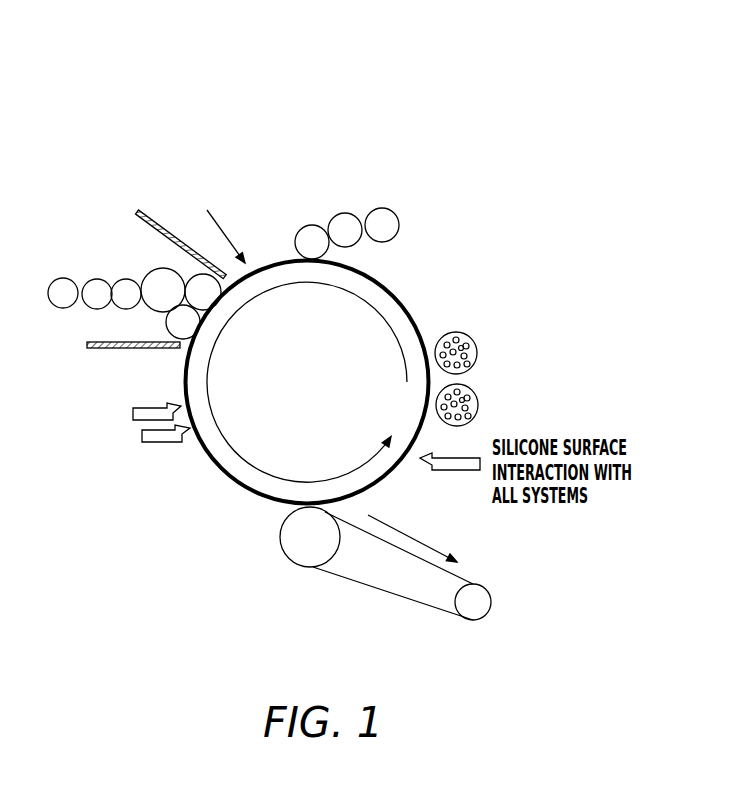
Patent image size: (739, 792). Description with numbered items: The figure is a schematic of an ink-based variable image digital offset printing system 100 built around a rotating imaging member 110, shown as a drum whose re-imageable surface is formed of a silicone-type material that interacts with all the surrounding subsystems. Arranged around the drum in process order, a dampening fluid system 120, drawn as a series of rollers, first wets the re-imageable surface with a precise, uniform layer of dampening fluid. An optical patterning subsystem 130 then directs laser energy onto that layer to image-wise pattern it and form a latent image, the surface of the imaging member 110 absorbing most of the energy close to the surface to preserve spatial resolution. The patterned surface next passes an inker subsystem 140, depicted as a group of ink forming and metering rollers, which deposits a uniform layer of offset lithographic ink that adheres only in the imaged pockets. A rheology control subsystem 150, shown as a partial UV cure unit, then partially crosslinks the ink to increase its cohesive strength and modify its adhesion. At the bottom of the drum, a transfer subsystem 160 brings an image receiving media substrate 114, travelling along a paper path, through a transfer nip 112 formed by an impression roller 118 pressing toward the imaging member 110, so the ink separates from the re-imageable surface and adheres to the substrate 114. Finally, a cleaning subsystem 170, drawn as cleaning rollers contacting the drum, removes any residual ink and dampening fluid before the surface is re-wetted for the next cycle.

The system 100 is at (190, 63).
The imaging member 110 is at (413, 285).
The transfer nip 112 is at (278, 510).
The image receiving media substrate 114 is at (452, 543).
The impression roller 118 is at (282, 552).
The dampening fluid system 120 is at (365, 168).
The optical patterning subsystem 130 is at (230, 162).
The inker subsystem 140 is at (130, 235).
The rheology control subsystem 150 is at (125, 398).
The transfer subsystem 160 is at (312, 595).
The cleaning subsystem 170 is at (507, 330).